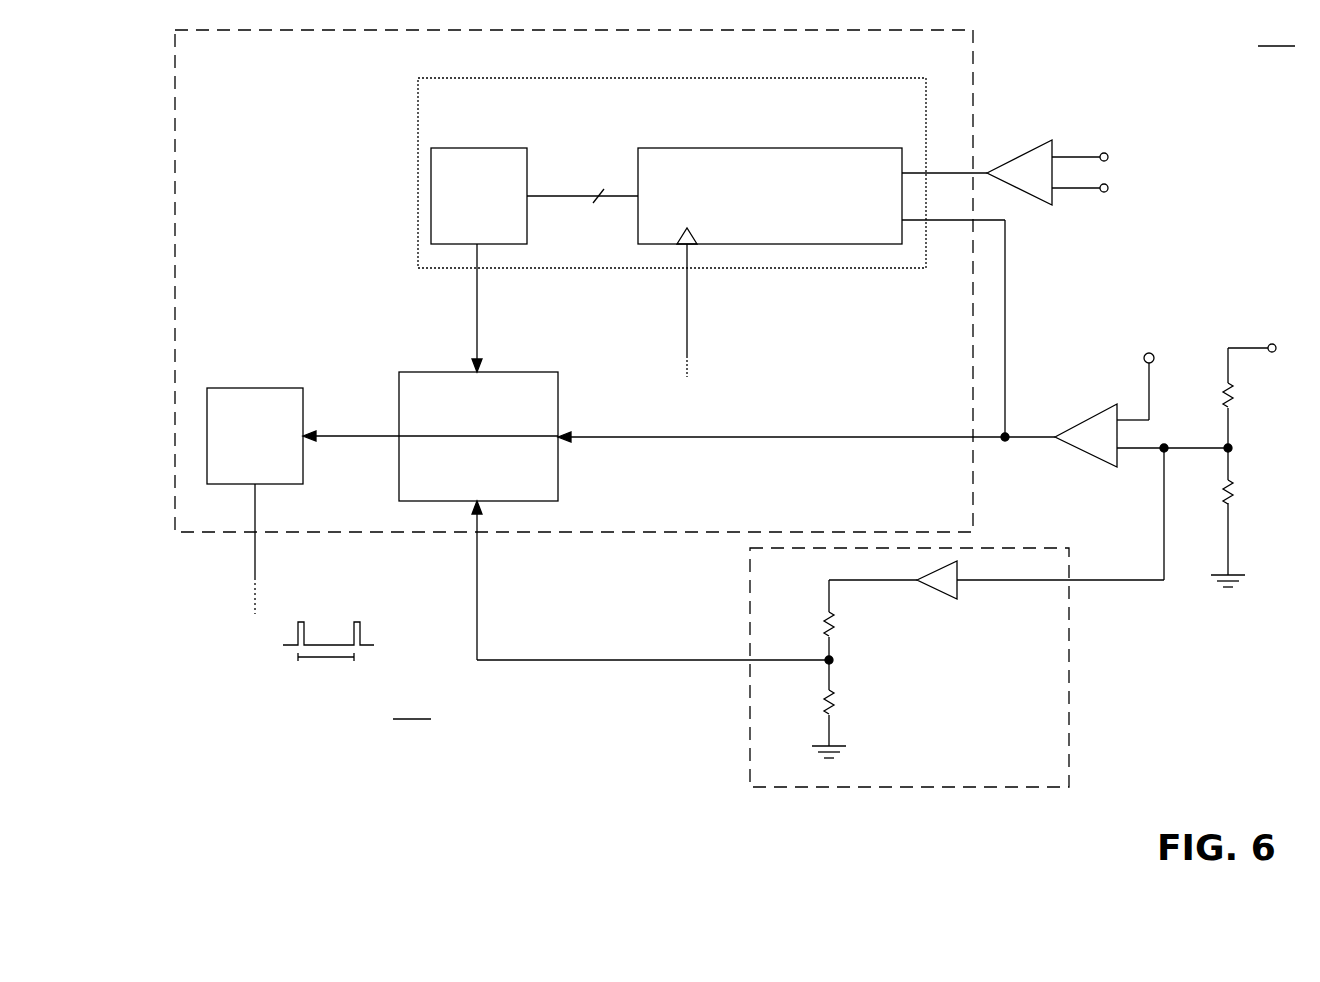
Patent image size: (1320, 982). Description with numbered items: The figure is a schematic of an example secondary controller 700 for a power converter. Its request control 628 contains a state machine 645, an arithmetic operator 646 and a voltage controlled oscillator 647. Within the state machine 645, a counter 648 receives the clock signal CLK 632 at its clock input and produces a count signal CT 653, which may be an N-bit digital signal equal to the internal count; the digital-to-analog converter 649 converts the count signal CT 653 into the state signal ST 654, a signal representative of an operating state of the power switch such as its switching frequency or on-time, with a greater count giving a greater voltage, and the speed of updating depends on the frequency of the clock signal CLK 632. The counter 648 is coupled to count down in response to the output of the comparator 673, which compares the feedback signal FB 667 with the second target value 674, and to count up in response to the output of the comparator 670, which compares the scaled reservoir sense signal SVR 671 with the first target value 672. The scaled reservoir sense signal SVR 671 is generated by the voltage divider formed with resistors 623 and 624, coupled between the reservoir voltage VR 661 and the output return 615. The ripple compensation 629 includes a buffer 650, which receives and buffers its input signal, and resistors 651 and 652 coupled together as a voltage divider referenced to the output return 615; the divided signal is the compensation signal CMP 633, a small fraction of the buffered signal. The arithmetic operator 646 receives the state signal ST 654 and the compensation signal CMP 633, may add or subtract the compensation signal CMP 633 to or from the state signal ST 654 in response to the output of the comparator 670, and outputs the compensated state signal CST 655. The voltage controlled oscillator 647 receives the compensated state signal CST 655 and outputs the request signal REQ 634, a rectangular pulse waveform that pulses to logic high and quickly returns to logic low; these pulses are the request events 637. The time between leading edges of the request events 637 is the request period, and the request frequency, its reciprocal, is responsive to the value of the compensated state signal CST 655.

The secondary controller 700 is at (1277, 35).
The request control 628 is at (540, 281).
The state machine 645 is at (822, 62).
The digital-to-analog converter (DAC) 649 is at (475, 146).
The counter 648 is at (681, 146).
The count signal CT 653 is at (594, 149).
The state signal ST 654 is at (493, 351).
The arithmetic operator 646 is at (408, 370).
The voltage controlled oscillator (VCO) 647 is at (269, 380).
The compensated state signal CST 655 is at (350, 450).
The clock signal CLK 632 is at (708, 393).
The request signal REQ 634 is at (245, 549).
The request events 637 is at (358, 613).
The compensation signal CMP 633 is at (626, 670).
The ripple compensation 629 is at (946, 669).
The buffer 650 is at (937, 602).
The resistor 651 is at (843, 628).
The resistor 652 is at (843, 699).
The comparator 670 is at (1084, 419).
The scaled reservoir sense SVR 671 is at (1194, 463).
The first target value TARGET_1 672 is at (1136, 332).
The reservoir voltage VR 661 is at (1289, 336).
The resistor 623 is at (1268, 391).
The resistor 624 is at (1242, 501).
The output return 615 is at (1238, 605).
The comparator 673 is at (1033, 147).
The feedback signal FB 667 is at (1138, 156).
The second target value TARGET_2 674 is at (1176, 188).